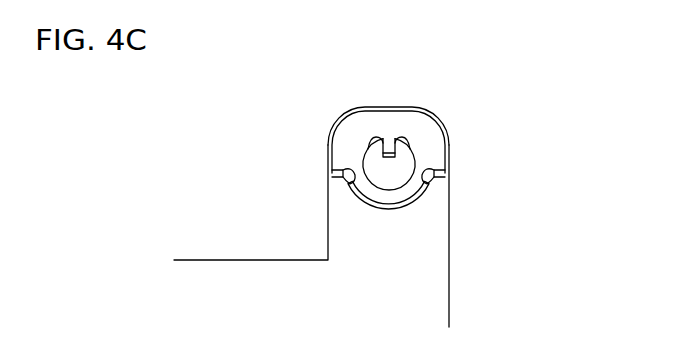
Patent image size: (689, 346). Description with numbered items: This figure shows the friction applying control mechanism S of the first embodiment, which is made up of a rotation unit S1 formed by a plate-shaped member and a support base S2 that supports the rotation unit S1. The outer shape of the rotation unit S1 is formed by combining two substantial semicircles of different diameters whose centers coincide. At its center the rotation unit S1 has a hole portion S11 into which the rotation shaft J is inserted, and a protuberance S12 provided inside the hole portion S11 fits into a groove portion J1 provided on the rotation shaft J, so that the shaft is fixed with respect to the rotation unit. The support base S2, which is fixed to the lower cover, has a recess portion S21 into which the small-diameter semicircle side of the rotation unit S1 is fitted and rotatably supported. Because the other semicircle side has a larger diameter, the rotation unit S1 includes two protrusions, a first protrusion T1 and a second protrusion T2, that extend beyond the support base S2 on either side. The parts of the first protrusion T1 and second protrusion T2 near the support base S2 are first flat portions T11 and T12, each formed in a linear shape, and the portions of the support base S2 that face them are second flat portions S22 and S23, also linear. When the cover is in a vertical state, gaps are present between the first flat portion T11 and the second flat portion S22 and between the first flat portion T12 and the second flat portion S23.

The friction applying control mechanism S is at (452, 86).
The rotation unit S1 is at (392, 118).
The hole portion S11 is at (408, 140).
The protuberance S12 is at (388, 152).
The rotation shaft J is at (398, 157).
The groove portion J1 is at (372, 160).
The support base S2 is at (436, 297).
The recess portion S21 is at (387, 210).
The second flat portion S22 is at (346, 184).
The second flat portion S23 is at (432, 186).
The first protrusion T1 is at (327, 169).
The first flat portion T11 is at (340, 178).
The second protrusion T2 is at (447, 175).
The first flat portion T12 is at (447, 182).